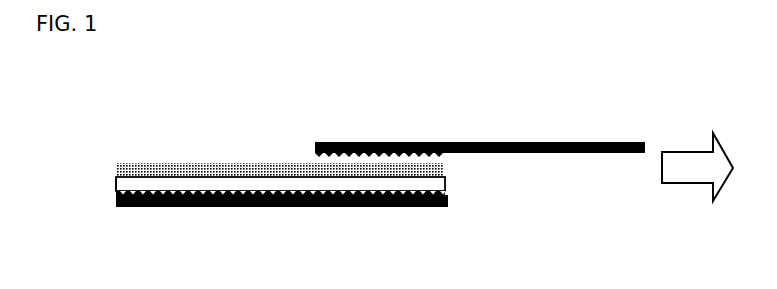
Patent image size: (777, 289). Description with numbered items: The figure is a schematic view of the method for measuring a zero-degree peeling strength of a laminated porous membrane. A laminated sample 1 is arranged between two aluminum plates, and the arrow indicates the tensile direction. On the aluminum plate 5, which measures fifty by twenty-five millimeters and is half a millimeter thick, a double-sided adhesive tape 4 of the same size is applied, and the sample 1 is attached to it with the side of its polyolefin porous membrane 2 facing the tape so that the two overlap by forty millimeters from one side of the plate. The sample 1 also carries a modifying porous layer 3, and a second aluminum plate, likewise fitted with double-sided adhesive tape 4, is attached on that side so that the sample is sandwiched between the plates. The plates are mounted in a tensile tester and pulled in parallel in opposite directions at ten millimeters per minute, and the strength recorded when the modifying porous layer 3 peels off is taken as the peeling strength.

The laminated sample 1 is at (460, 174).
The polyolefin porous membrane 2 is at (115, 186).
The modifying porous layer 3 is at (141, 163).
The double-sided adhesive tape 4 is at (313, 153).
The aluminum plate 5 is at (500, 142).